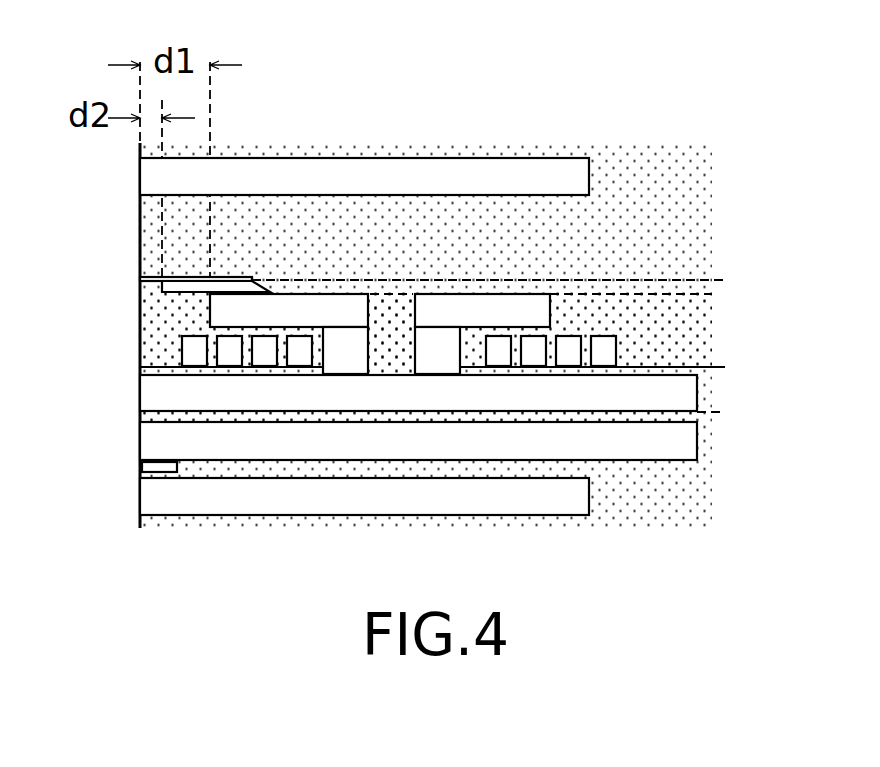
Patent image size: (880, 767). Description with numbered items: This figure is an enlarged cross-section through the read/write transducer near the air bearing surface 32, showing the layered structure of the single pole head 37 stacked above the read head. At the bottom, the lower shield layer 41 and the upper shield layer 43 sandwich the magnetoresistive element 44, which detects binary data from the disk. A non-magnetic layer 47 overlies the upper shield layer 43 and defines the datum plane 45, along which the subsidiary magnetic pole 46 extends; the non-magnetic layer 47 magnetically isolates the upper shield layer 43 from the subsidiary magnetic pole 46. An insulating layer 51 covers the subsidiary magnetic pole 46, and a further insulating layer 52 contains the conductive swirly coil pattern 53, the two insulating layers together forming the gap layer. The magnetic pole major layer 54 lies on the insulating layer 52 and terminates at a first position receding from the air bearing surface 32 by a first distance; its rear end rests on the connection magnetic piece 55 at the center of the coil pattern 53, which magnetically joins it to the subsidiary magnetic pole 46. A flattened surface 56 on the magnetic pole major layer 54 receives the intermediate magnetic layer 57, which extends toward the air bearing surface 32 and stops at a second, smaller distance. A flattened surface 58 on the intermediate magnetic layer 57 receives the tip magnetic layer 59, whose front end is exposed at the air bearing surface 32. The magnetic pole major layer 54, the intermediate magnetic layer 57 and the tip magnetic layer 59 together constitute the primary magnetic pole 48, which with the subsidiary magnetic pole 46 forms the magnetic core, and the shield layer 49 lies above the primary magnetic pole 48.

The air bearing surface 32 is at (140, 522).
The single pole head 37 is at (314, 127).
The lower shield layer 41 is at (140, 504).
The upper shield layer 43 is at (140, 430).
The magnetoresistive element 44 is at (142, 467).
The datum plane 45 is at (710, 412).
The subsidiary magnetic pole 46 is at (140, 395).
The non-magnetic layer 47 is at (140, 416).
The primary magnetic pole 48 is at (128, 271).
The shield layer 49 is at (140, 167).
The insulating layer 51 is at (140, 370).
The insulating layer 52 is at (140, 334).
The conductive swirly coil pattern 53 is at (307, 337).
The magnetic pole major layer 54 is at (297, 303).
The connection magnetic piece 55 is at (365, 347).
The flattened surface 56 is at (712, 294).
The intermediate magnetic layer 57 is at (162, 288).
The flattened surface 58 is at (662, 280).
The tip magnetic layer 59 is at (251, 279).